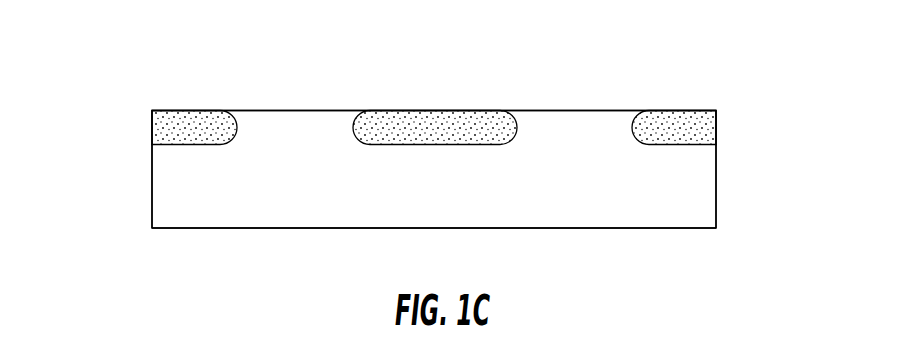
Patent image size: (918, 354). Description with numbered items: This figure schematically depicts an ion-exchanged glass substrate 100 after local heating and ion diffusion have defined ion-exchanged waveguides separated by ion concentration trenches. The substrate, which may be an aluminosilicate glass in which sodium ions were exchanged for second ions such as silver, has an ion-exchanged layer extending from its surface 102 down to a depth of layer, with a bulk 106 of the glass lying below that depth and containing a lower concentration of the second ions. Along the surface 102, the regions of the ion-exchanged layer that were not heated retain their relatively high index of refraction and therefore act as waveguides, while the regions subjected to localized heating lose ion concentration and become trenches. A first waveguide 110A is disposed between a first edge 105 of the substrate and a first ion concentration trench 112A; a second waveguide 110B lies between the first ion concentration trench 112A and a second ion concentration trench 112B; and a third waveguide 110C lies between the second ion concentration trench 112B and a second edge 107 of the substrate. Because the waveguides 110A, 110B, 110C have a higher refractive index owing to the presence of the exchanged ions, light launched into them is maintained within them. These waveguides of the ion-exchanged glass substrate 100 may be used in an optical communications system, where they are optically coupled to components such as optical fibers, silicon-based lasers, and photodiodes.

The ion-exchanged glass substrate 100 is at (124, 97).
The surface 102 is at (597, 110).
The first edge 105 is at (152, 183).
The bulk 106 is at (403, 197).
The second edge 107 is at (716, 187).
The first waveguide 110A is at (196, 110).
The second waveguide 110B is at (411, 110).
The third waveguide 110C is at (689, 110).
The first ion concentration trench 112A is at (283, 134).
The second ion concentration trench 112B is at (568, 134).